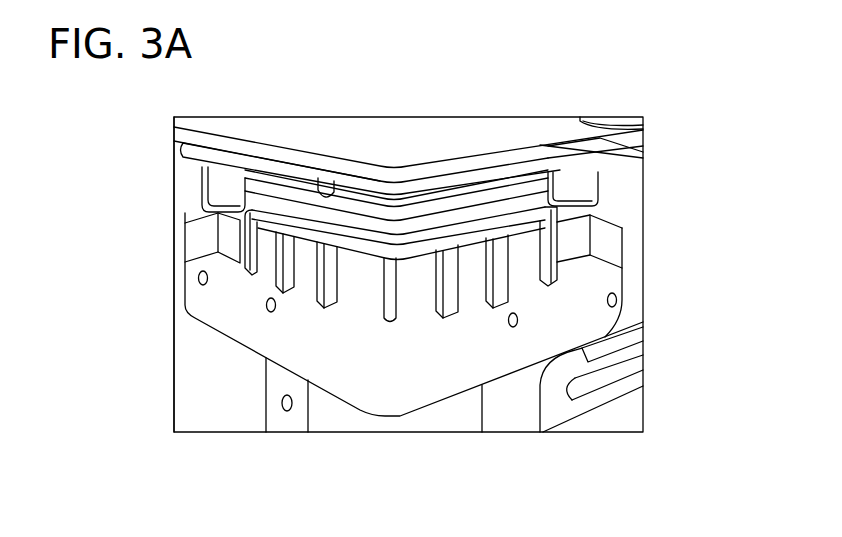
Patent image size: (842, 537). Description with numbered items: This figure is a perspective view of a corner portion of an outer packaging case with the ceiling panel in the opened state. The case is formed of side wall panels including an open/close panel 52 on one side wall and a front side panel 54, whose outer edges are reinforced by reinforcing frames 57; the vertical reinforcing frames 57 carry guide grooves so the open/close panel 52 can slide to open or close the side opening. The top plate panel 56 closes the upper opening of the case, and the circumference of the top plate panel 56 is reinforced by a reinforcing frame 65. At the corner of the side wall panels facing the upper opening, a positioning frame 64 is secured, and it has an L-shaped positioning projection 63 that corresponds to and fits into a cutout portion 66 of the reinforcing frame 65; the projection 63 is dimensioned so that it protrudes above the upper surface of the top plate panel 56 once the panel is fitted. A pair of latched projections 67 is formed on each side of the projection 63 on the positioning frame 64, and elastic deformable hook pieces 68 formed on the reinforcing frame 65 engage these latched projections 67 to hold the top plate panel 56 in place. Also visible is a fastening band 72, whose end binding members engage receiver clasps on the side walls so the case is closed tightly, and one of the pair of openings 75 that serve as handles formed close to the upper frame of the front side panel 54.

The open/close panel 52 is at (200, 377).
The front side panel 54 is at (627, 410).
The top plate panel 56 is at (550, 125).
The reinforcing frame 57 is at (280, 427).
The L-shaped positioning projection 63 is at (382, 243).
The positioning frame 64 is at (347, 377).
The reinforcing frame 65 is at (503, 162).
The cutout portion 66 is at (322, 180).
The latched projection 67 is at (218, 252).
The elastic deformable hook piece 68 is at (207, 197).
The fastening band 72 is at (645, 119).
The opening as handle 75 is at (633, 380).